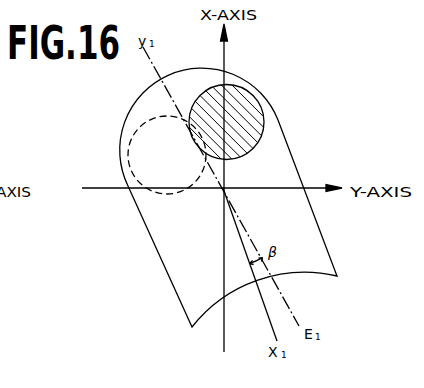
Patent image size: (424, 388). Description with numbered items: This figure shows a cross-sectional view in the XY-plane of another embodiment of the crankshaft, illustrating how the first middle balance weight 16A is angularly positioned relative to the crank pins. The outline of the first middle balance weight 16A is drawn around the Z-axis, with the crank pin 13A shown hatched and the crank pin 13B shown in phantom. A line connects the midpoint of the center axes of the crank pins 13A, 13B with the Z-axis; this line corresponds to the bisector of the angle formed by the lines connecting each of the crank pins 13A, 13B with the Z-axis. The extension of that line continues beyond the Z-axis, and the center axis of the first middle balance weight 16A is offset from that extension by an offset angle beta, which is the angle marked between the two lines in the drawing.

The crank pin 13A is at (264, 117).
The crank pin 13B is at (138, 129).
The first middle balance weight 16A is at (322, 282).